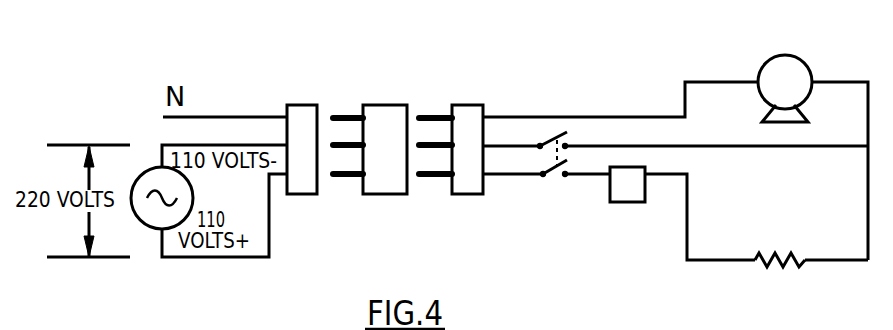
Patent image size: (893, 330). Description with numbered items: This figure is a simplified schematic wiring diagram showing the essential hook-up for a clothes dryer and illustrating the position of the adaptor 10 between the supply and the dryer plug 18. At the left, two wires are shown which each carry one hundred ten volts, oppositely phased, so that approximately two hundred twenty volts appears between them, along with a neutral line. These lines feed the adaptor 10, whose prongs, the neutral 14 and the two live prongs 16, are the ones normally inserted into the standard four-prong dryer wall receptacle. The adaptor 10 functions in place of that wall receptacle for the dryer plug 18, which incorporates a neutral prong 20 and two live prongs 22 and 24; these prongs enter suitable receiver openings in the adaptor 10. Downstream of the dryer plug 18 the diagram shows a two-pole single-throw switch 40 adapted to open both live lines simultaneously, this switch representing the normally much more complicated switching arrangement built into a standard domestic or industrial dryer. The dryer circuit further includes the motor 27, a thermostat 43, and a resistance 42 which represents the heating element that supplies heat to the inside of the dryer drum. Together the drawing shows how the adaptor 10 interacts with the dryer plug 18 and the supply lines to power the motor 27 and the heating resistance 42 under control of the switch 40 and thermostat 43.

The adaptor 10 is at (385, 112).
The neutral prong 14 is at (350, 112).
The live prong 16 is at (335, 150).
The dryer plug 18 is at (476, 110).
The neutral prong 20 is at (431, 113).
The live prong 22 is at (426, 148).
The live prong 24 is at (433, 177).
The motor 27 is at (804, 63).
The two-pole single-throw switch 40 is at (553, 178).
The resistance 42 is at (775, 276).
The thermostat 43 is at (628, 204).